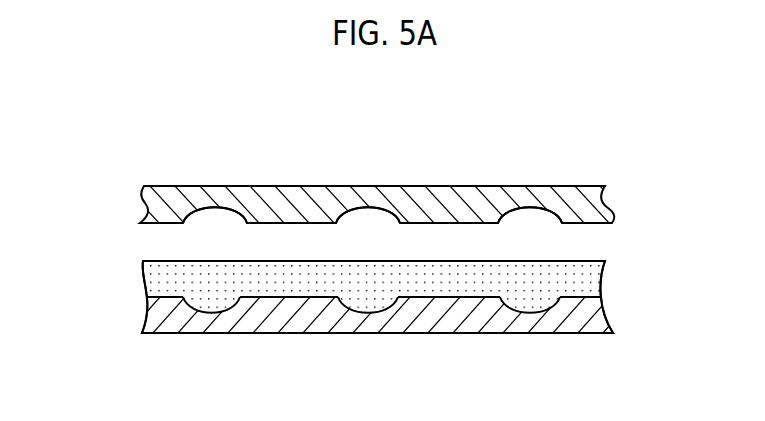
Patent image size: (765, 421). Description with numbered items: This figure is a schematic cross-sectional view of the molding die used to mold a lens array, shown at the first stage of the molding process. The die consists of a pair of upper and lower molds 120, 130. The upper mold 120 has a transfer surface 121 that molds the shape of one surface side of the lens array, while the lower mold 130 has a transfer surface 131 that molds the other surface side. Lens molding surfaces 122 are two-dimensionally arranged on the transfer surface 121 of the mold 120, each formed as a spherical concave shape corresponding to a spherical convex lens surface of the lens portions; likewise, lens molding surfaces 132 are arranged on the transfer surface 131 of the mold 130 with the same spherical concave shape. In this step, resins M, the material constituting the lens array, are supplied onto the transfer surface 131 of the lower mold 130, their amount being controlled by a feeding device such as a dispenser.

The mold 120 is at (603, 215).
The transfer surface 121 is at (147, 222).
The lens molding surface 122 is at (223, 211).
The resin M is at (597, 277).
The mold 130 is at (597, 325).
The transfer surface 131 is at (150, 296).
The lens molding surface 132 is at (209, 302).